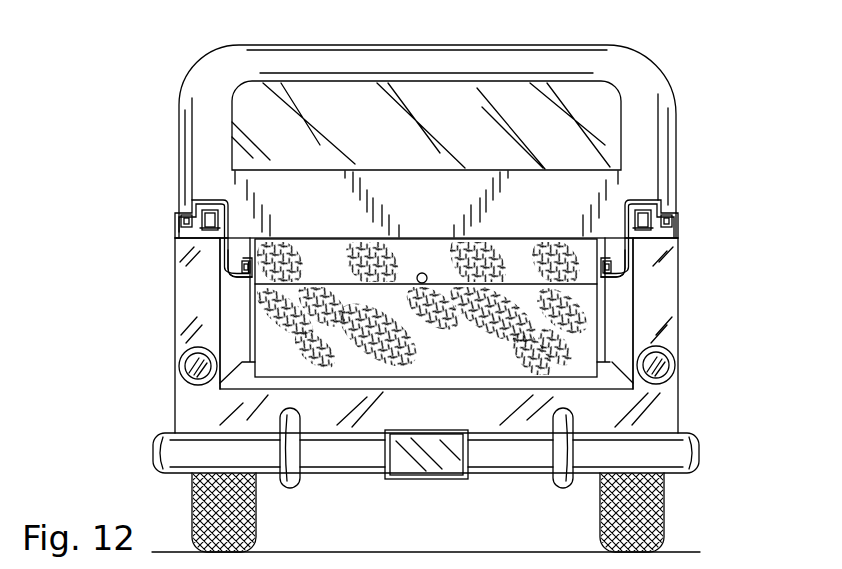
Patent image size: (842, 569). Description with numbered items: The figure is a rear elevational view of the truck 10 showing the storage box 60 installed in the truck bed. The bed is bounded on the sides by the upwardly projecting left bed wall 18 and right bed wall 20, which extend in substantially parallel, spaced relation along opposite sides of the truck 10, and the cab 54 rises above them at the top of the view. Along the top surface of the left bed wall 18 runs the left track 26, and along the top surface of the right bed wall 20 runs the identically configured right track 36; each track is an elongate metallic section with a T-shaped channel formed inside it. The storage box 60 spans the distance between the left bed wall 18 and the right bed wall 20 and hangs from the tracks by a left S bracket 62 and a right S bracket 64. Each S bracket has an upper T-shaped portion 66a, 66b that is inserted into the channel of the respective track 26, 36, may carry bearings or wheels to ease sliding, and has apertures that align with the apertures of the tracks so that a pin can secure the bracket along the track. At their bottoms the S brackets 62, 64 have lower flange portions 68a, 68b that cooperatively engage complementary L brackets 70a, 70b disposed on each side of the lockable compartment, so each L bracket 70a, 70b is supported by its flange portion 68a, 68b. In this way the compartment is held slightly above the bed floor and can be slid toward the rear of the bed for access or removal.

The truck 10 is at (682, 399).
The left bed wall 18 is at (192, 332).
The right bed wall 20 is at (657, 327).
The left track 26 is at (177, 212).
The right track 36 is at (676, 210).
The cab 54 is at (578, 45).
The storage box 60 is at (430, 359).
The left S bracket 62 is at (213, 200).
The right S bracket 64 is at (641, 202).
The upper T-shaped portion 66a is at (197, 228).
The upper T-shaped portion 66b is at (658, 226).
The lower flange portion 68a is at (226, 275).
The lower flange portion 68b is at (613, 273).
The L bracket 70a is at (243, 253).
The L bracket 70b is at (612, 253).